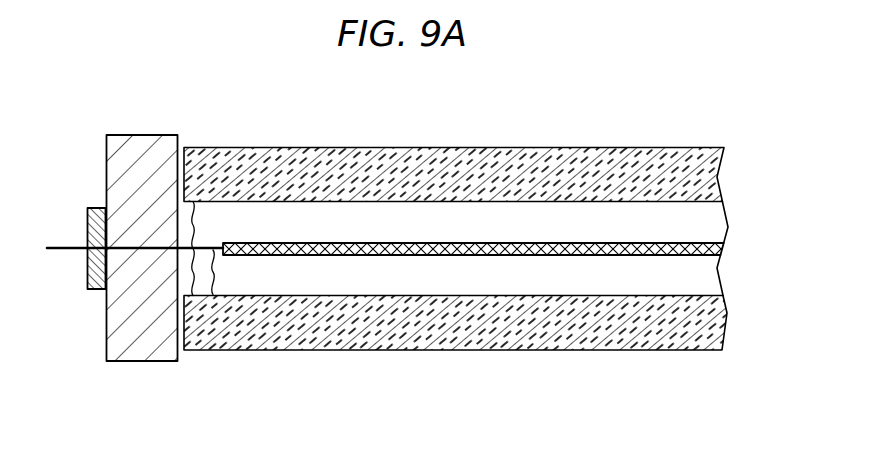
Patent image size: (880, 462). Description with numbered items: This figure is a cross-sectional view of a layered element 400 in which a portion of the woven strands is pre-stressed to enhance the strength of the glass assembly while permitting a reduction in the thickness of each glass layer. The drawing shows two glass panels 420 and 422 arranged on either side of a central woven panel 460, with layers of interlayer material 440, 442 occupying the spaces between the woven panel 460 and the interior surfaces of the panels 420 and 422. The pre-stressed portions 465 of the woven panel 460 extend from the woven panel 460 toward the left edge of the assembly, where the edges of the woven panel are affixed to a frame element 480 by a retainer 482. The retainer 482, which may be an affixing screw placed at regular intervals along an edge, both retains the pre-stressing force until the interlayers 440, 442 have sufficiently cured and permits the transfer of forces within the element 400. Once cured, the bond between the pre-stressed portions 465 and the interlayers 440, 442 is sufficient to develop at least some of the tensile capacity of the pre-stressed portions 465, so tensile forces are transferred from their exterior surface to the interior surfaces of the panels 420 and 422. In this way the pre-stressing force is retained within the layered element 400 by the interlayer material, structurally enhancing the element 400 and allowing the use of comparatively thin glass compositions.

The layered element 400 is at (615, 96).
The panel 420 is at (513, 158).
The panel 422 is at (427, 338).
The interlayer 440 is at (722, 218).
The interlayer 442 is at (712, 268).
The woven panel 460 is at (608, 255).
The pre-stressed portions 465 is at (213, 296).
The frame element 480 is at (121, 361).
The retainer 482 is at (87, 228).